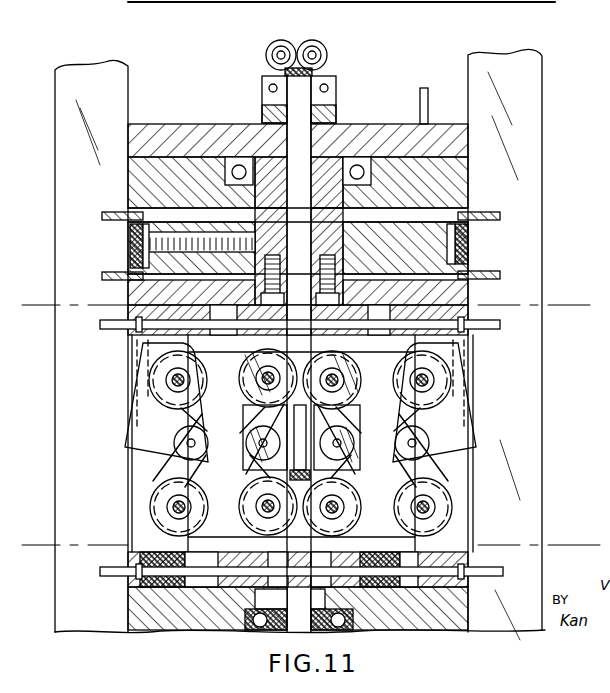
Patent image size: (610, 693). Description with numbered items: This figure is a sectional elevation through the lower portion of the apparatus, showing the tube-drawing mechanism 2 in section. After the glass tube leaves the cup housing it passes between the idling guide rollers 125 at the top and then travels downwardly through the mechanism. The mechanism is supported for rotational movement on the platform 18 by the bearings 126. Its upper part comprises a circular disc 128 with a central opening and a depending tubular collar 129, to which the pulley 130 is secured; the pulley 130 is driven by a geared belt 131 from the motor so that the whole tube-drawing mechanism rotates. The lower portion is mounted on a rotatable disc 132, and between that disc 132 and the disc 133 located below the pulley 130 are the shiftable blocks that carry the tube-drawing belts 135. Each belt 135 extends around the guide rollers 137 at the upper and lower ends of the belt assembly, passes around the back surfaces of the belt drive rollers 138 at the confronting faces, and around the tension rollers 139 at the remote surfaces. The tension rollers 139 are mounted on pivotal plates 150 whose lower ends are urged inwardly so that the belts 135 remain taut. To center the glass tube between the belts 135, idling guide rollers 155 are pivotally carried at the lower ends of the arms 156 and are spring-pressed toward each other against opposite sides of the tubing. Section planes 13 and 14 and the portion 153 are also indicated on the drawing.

The rack wall 2 is at (513, 100).
The section line 13 is at (33, 304).
The section line 14 is at (33, 542).
The platform 18 is at (468, 178).
The idling guide rollers 125 is at (300, 42).
The bearings 126 is at (357, 165).
The circular disc 128 is at (168, 123).
The tubular collar 129 is at (325, 240).
The pulley 130 is at (462, 243).
The geared belt 131 is at (128, 241).
The rotatable disc 132 is at (128, 602).
The disc 133 is at (128, 288).
The tube-drawing belts 135 is at (200, 416).
The guide rollers 137 is at (158, 509).
The belt drive rollers 138 is at (260, 450).
The tension rollers 139 is at (172, 443).
The pivotal plates 150 is at (147, 441).
The support 153 is at (596, 354).
The idling guide rollers 155 is at (335, 518).
The arms 156 is at (283, 376).